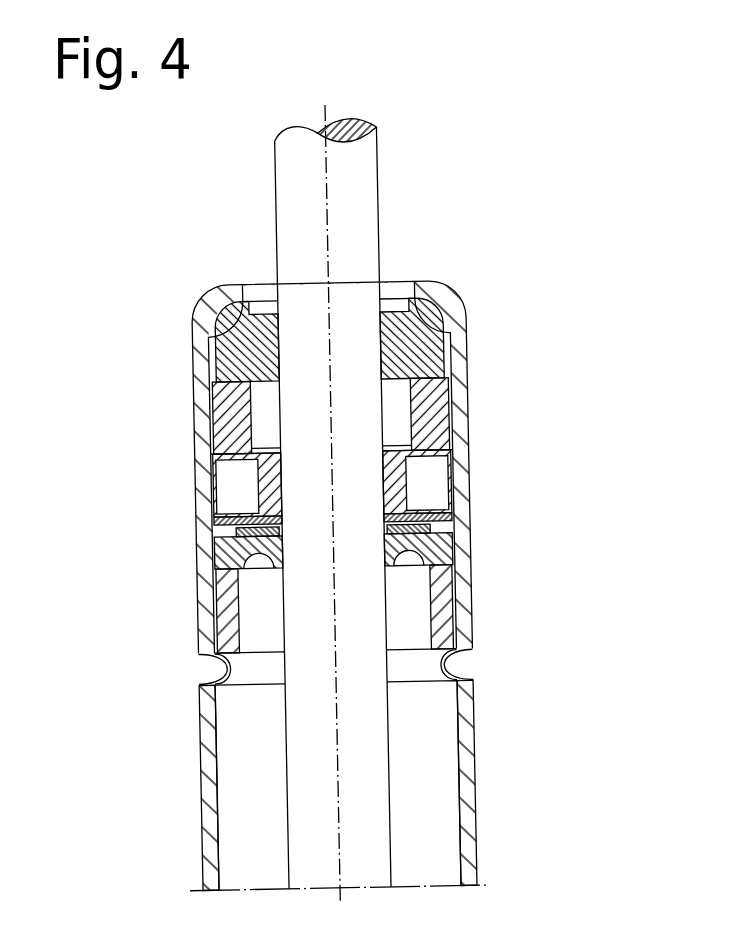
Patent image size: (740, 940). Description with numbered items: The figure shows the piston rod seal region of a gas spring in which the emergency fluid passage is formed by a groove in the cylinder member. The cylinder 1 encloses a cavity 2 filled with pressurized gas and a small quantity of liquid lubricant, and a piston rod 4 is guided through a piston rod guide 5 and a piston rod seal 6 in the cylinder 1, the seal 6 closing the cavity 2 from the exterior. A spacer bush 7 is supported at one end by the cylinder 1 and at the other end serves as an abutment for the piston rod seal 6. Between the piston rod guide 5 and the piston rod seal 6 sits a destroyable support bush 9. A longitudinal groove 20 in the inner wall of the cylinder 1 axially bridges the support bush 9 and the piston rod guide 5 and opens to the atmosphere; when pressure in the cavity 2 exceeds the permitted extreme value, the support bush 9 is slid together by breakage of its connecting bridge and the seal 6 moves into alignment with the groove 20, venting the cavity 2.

The cylinder 1 is at (463, 728).
The cavity 2 is at (427, 817).
The piston rod 4 is at (353, 211).
The piston rod guide 5 is at (444, 347).
The piston rod seal 6 is at (455, 552).
The spacer bush 7 is at (450, 612).
The support bush 9 is at (466, 495).
The longitudinal groove 20 is at (450, 420).